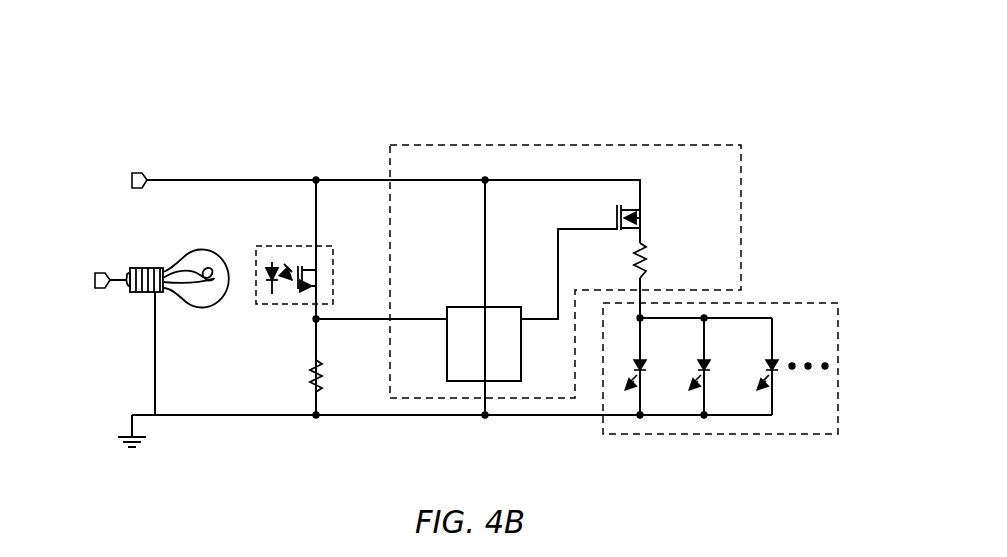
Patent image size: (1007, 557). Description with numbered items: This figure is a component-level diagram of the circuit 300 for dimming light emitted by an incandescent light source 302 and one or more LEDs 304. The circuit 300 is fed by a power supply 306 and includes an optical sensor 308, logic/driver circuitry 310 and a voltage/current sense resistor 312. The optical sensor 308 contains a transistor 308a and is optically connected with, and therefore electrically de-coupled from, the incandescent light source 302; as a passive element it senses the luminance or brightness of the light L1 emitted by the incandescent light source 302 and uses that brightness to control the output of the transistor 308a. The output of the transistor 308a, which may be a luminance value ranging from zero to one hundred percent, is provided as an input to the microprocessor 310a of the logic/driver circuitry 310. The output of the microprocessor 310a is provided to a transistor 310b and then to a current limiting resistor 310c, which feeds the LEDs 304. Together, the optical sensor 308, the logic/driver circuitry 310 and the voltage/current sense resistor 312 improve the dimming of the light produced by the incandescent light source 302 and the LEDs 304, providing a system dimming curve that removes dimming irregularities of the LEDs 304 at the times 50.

The circuit 300 is at (765, 83).
The incandescent light source 302 is at (204, 246).
The LED 304 is at (790, 292).
The power supply 306 is at (137, 190).
The optical sensor 308 is at (319, 256).
The transistor 308a is at (320, 273).
The logic/driver circuitry 310 is at (565, 246).
The microprocessor 310a is at (462, 307).
The transistor 310b is at (653, 217).
The current limiting resistor 310c is at (652, 260).
The voltage/current sense resistor 312 is at (307, 370).
The times 50 is at (97, 290).
The light emitted from the incandescent light source L1 is at (230, 279).